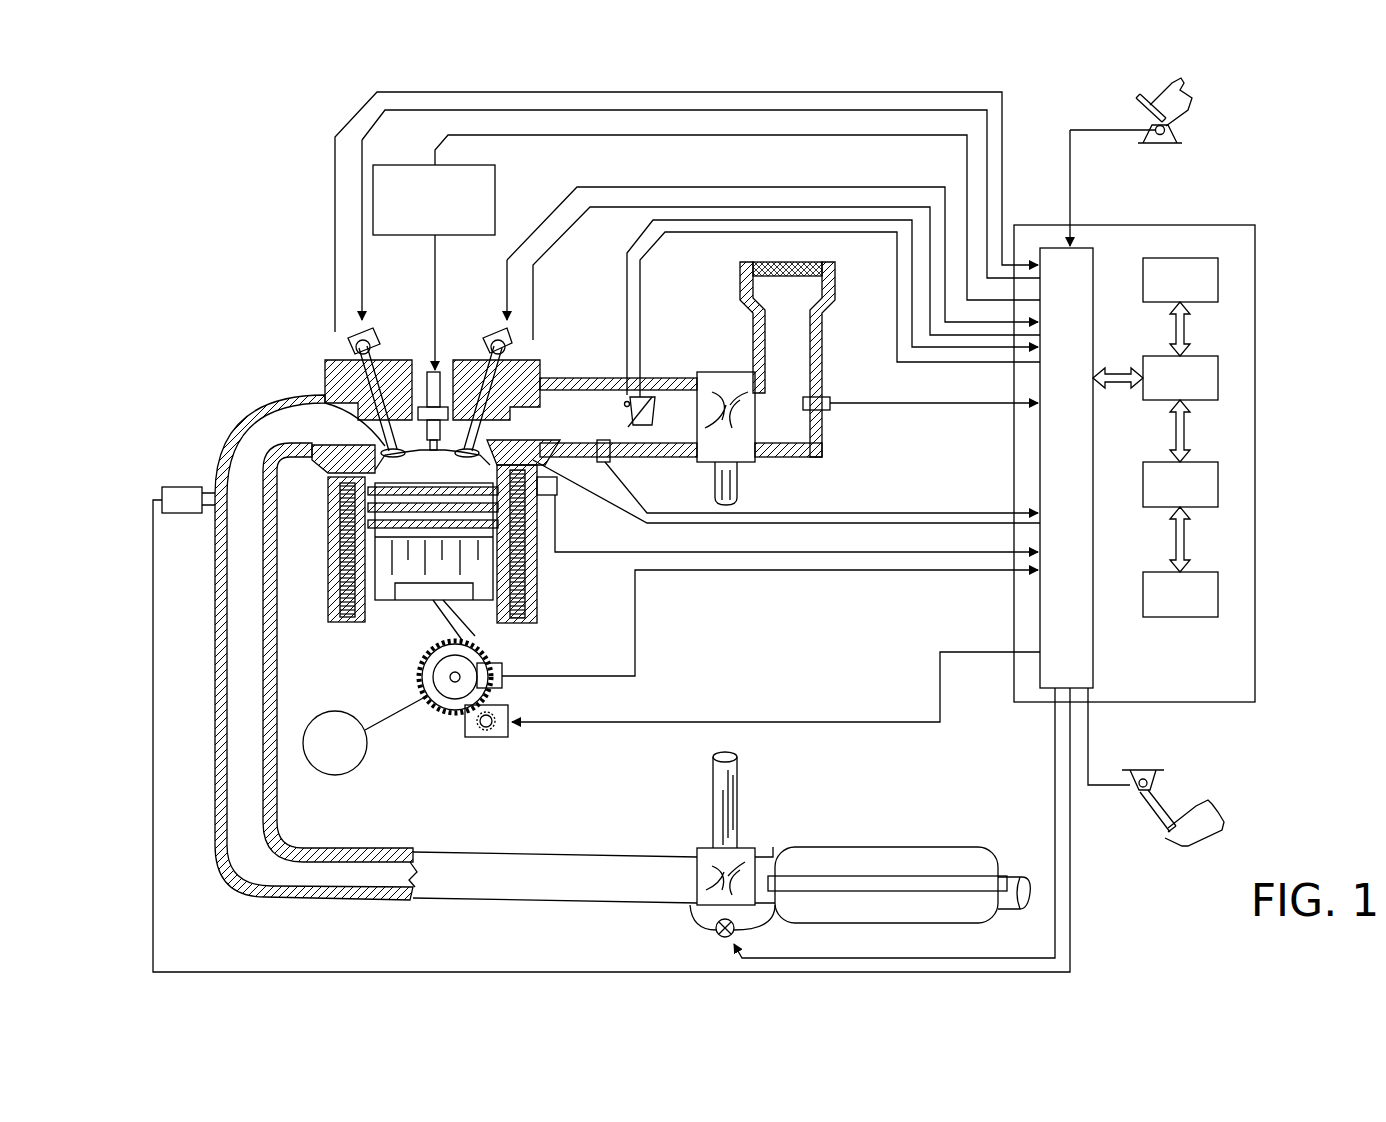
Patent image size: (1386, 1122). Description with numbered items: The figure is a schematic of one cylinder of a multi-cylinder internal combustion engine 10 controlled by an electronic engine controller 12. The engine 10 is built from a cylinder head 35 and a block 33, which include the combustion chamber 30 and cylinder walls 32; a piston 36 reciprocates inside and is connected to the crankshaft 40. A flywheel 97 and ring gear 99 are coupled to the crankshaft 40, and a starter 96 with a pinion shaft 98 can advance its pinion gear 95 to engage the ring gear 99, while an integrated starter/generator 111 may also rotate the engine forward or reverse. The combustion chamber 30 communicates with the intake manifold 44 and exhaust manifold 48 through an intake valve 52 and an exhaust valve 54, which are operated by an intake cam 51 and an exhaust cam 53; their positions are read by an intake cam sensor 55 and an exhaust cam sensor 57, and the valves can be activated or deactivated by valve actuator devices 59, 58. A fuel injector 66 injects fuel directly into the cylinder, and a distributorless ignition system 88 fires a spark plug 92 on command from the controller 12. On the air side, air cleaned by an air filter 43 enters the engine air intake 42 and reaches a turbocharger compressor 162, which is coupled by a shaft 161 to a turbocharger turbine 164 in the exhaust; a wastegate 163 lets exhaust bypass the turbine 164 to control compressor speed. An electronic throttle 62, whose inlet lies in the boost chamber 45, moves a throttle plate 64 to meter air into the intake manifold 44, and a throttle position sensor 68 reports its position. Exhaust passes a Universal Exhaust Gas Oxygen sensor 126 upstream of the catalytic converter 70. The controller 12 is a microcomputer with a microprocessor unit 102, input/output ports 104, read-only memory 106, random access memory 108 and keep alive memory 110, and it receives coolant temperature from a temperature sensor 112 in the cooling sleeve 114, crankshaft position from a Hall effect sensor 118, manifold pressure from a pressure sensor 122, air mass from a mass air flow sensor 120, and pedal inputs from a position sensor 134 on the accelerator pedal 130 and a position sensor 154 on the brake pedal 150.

The internal combustion engine 10 is at (260, 306).
The electronic engine controller 12 is at (1244, 225).
The combustion chamber 30 is at (427, 468).
The cylinder walls 32 is at (373, 615).
The block 33 is at (325, 512).
The cylinder head 35 is at (322, 362).
The piston 36 is at (420, 598).
The crankshaft 40 is at (440, 712).
The engine air intake 42 is at (752, 351).
The air filter 43 is at (805, 278).
The intake manifold 44 is at (681, 417).
The boost chamber 45 is at (690, 386).
The exhaust manifold 48 is at (314, 647).
The intake cam 51 is at (505, 340).
The intake valve 52 is at (498, 430).
The exhaust cam 53 is at (345, 350).
The exhaust valve 54 is at (325, 403).
The intake cam sensor 55 is at (510, 348).
The exhaust cam sensor 57 is at (352, 350).
The valve actuator device 58 is at (378, 345).
The valve actuator device 59 is at (488, 360).
The electronic throttle 62 is at (650, 412).
The throttle plate 64 is at (645, 425).
The fuel injector 66 is at (555, 495).
The throttle position sensor 68 is at (618, 385).
The catalytic converter 70 is at (825, 847).
The distributorless ignition system 88 is at (390, 165).
The spark plug 92 is at (440, 372).
The pinion gear 95 is at (490, 737).
The starter 96 is at (500, 737).
The flywheel 97 is at (430, 676).
The pinion shaft 98 is at (480, 740).
The ring gear 99 is at (445, 712).
The microprocessor unit 102 is at (1218, 370).
The input/output ports 104 is at (1096, 256).
The read-only memory 106 is at (1218, 275).
The random access memory 108 is at (1218, 482).
The keep alive memory 110 is at (1218, 590).
The integrated starter/generator 111 is at (335, 743).
The temperature sensor 112 is at (796, 526).
The cooling sleeve 114 is at (527, 575).
The Hall effect sensor 118 is at (505, 668).
The mass air flow sensor 120 is at (825, 397).
The pressure sensor 122 is at (612, 462).
The Universal Exhaust Gas Oxygen sensor 126 is at (165, 487).
The accelerator pedal 130 is at (1195, 151).
The position sensor 134 is at (1165, 128).
The brake pedal 150 is at (1156, 779).
The position sensor 154 is at (1135, 786).
The shaft 161 is at (740, 817).
The turbocharger compressor 162 is at (740, 445).
The wastegate 163 is at (718, 936).
The turbocharger turbine 164 is at (700, 848).